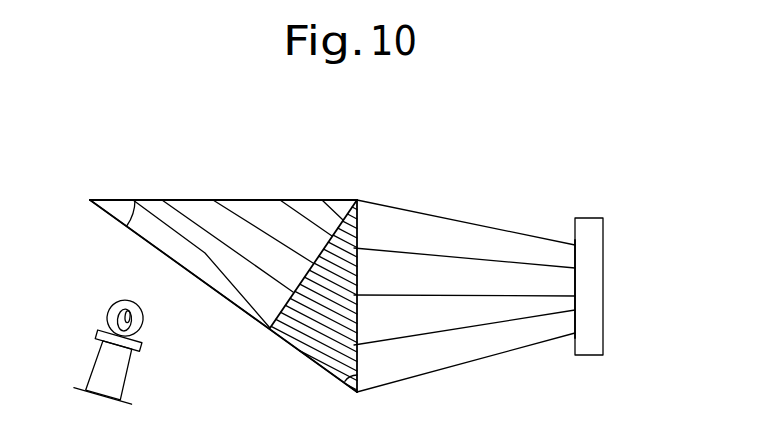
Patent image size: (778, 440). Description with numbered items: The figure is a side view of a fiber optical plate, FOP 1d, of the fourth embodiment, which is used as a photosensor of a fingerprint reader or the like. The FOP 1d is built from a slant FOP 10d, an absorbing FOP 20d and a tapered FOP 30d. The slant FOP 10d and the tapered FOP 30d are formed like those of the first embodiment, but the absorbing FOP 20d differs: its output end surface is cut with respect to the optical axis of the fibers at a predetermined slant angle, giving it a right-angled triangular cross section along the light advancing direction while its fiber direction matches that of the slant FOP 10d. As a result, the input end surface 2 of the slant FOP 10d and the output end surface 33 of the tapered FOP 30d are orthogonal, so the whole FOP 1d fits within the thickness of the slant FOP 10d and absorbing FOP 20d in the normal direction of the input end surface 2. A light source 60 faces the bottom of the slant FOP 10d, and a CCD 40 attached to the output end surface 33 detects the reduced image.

The FOP 1d is at (515, 163).
The input end surface 2 is at (147, 198).
The slant FOP 10d is at (292, 198).
The absorbing FOP 20d is at (308, 340).
The tapered FOP 30d is at (485, 345).
The output end surface 33 is at (572, 252).
The CCD 40 is at (598, 228).
The light source 60 is at (153, 347).